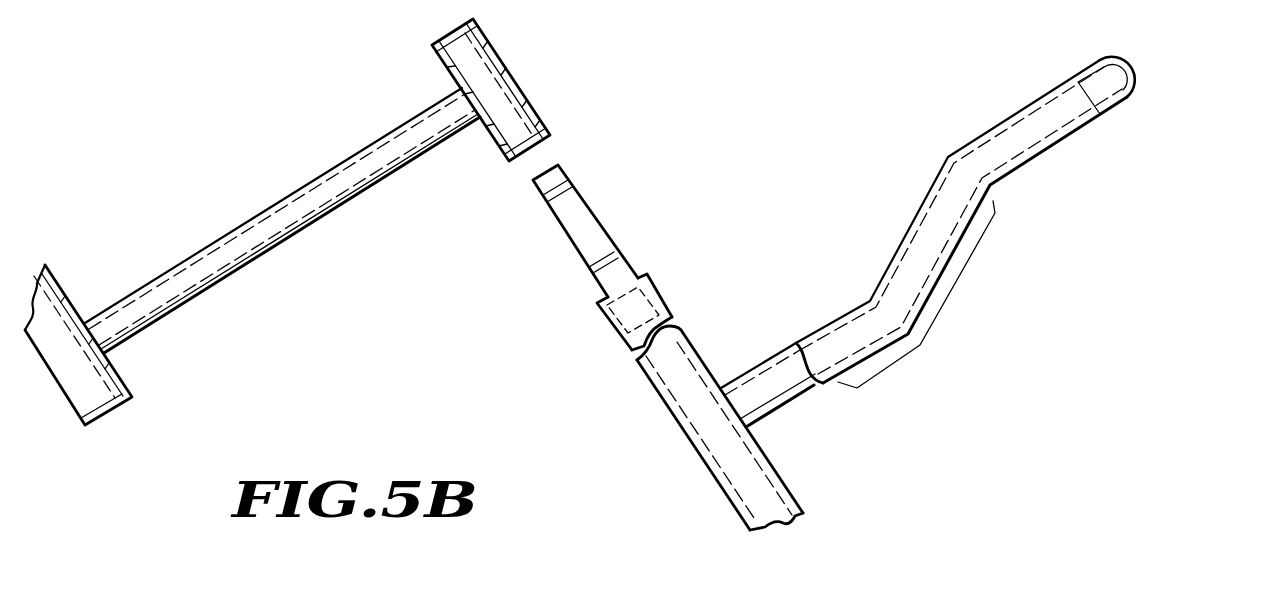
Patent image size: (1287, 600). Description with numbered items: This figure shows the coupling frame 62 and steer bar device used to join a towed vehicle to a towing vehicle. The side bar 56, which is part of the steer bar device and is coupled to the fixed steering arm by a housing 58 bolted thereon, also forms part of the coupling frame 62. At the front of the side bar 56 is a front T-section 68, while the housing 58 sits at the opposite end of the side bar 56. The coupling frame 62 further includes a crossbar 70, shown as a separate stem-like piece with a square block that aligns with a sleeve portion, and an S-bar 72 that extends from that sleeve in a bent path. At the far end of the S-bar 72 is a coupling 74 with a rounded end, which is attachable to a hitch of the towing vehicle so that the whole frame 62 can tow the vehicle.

The side bar 56 is at (320, 205).
The housing 58 is at (120, 383).
The coupling frame 62 is at (504, 306).
The front T-section 68 is at (500, 155).
The crossbar 70 is at (650, 297).
The S-bar 72 is at (957, 292).
The coupling 74 is at (1105, 132).